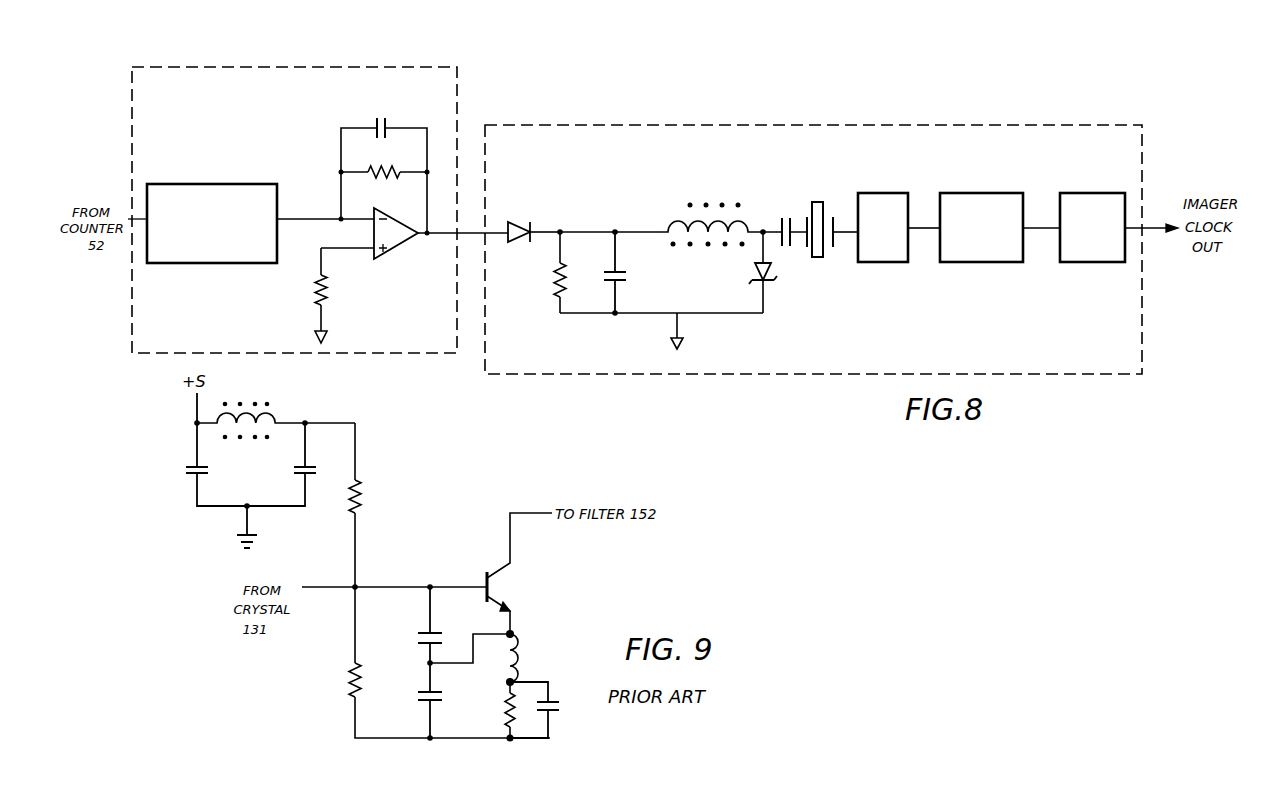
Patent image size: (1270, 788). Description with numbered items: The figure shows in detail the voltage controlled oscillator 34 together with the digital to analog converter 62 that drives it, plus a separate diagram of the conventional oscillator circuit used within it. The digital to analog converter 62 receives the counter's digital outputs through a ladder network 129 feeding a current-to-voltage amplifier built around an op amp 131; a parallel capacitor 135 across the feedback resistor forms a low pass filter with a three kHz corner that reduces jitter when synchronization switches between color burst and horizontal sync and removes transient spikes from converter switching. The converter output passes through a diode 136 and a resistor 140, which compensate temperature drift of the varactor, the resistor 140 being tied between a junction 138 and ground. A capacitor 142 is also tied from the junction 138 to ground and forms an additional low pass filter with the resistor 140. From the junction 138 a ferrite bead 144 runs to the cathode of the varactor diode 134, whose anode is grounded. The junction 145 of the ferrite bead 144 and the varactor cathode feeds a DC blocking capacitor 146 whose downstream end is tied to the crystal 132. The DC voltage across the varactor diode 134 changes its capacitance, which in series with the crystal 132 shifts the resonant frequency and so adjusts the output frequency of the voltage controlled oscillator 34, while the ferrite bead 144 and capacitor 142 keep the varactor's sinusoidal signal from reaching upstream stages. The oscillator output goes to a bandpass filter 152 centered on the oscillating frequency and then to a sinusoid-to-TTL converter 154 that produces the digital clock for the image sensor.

The voltage controlled oscillator 34 is at (964, 118).
The digital to analog converter 62 is at (373, 68).
The ladder network 129 is at (205, 184).
The op amp 131 is at (390, 250).
The crystal 132 is at (372, 176).
The varactor diode 134 is at (762, 281).
The parallel capacitor 135 is at (386, 125).
The diode 136 is at (513, 222).
The junction 138 is at (560, 232).
The resistor 140 is at (556, 281).
The capacitor 142 is at (626, 279).
The ferrite bead 144 is at (672, 207).
The junction 145 is at (763, 228).
The DC blocking capacitor 146 is at (793, 243).
The bandpass filter 152 is at (952, 193).
The sinusoid-to-TTL converter 154 is at (1075, 193).